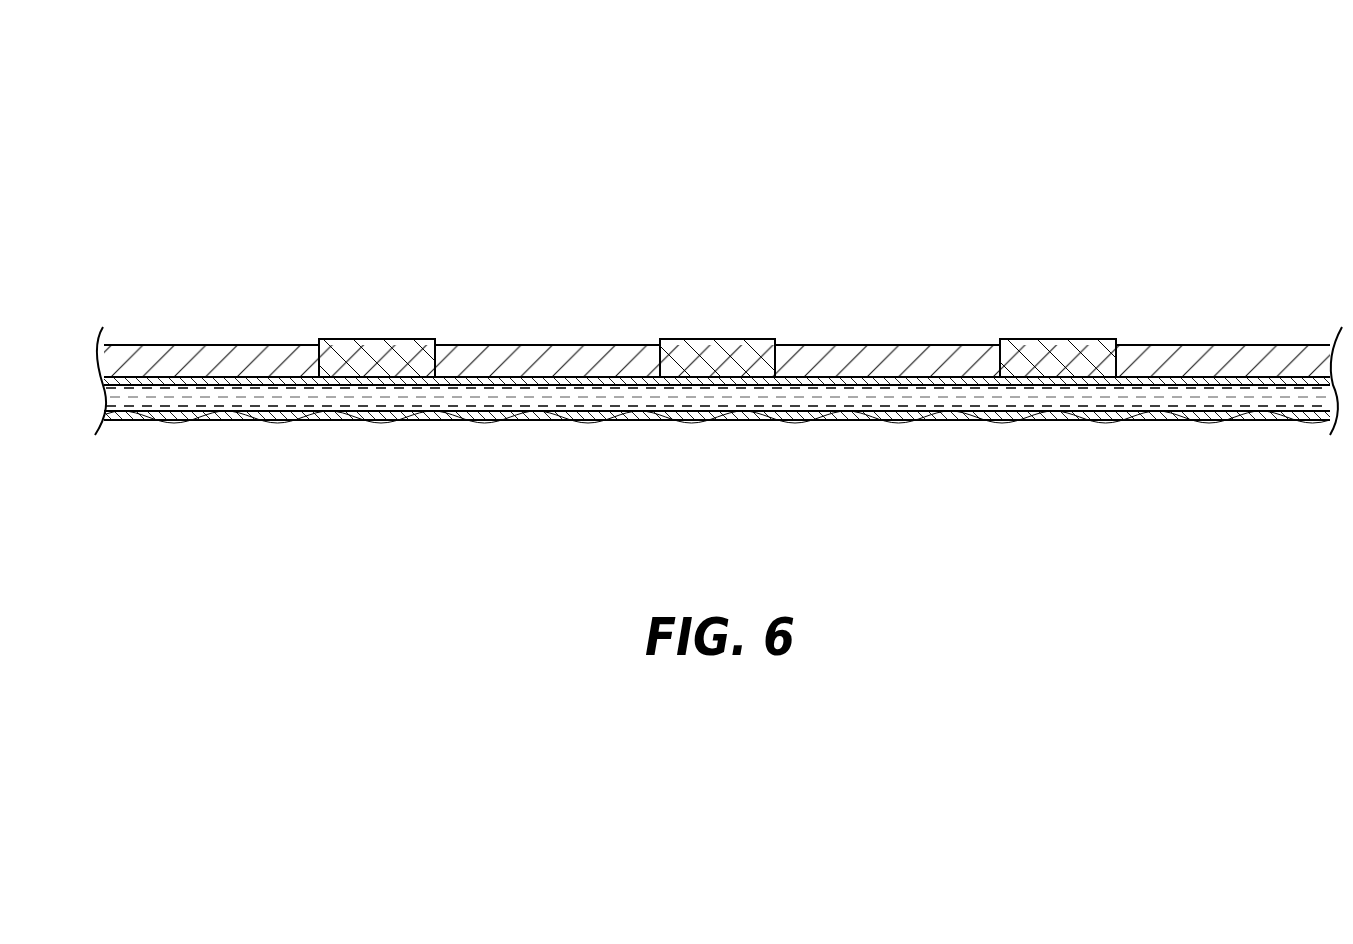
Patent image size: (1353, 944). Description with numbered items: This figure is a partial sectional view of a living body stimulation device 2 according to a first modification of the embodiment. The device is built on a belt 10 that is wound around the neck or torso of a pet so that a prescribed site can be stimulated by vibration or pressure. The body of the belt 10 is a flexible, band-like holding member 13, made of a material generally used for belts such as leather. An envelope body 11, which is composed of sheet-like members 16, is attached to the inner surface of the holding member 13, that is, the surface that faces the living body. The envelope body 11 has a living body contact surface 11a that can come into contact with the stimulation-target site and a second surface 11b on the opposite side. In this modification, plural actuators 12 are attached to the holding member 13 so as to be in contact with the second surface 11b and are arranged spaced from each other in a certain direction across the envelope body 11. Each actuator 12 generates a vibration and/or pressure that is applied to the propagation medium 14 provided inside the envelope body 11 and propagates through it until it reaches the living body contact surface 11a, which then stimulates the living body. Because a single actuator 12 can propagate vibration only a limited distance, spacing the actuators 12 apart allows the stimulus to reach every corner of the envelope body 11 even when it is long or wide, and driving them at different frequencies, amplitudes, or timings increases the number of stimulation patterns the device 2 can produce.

The living body stimulation device 2 is at (681, 156).
The belt 10 is at (615, 345).
The envelope body 11 is at (486, 378).
The living body contact surface 11a is at (566, 421).
The second surface 11b is at (832, 379).
The actuator 12 is at (381, 348).
The holding member 13 is at (537, 347).
The propagation medium 14 is at (834, 399).
The sheet-like member 16 is at (1180, 378).